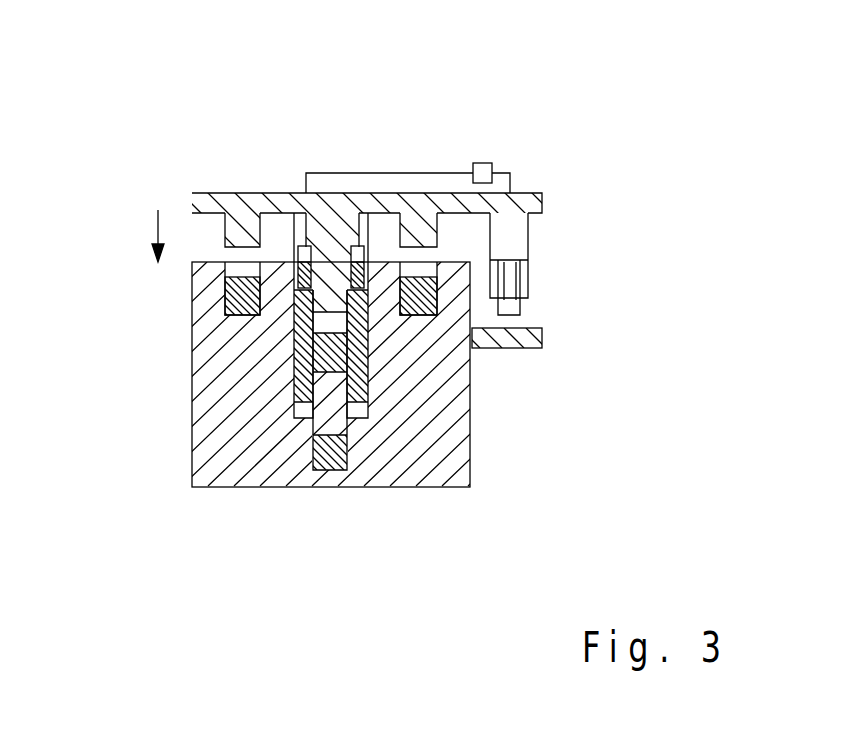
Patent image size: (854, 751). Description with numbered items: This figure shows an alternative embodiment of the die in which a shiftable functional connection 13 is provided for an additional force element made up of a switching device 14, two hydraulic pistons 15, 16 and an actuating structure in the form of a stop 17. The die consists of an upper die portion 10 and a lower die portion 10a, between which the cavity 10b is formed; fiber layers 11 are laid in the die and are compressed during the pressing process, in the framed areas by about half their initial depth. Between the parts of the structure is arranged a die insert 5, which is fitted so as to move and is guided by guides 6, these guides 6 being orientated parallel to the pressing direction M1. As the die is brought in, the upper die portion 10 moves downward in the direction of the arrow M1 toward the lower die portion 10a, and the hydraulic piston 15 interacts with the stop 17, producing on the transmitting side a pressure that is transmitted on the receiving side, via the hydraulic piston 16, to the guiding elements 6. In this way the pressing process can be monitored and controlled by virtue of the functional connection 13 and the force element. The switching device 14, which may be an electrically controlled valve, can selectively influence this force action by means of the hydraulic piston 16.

The upper die portion 10 is at (216, 194).
The lower die portion 10a is at (267, 462).
The cavity 10b is at (257, 196).
The fiber layers 11 is at (295, 346).
The shiftable functional connection 13 is at (412, 170).
The switching device 14 is at (482, 163).
The hydraulic piston 15 is at (517, 245).
The hydraulic piston 16 is at (352, 268).
The stop 17 is at (543, 338).
The die insert 5 is at (348, 427).
The guides 6 is at (294, 377).
The pressing direction M1 is at (153, 221).